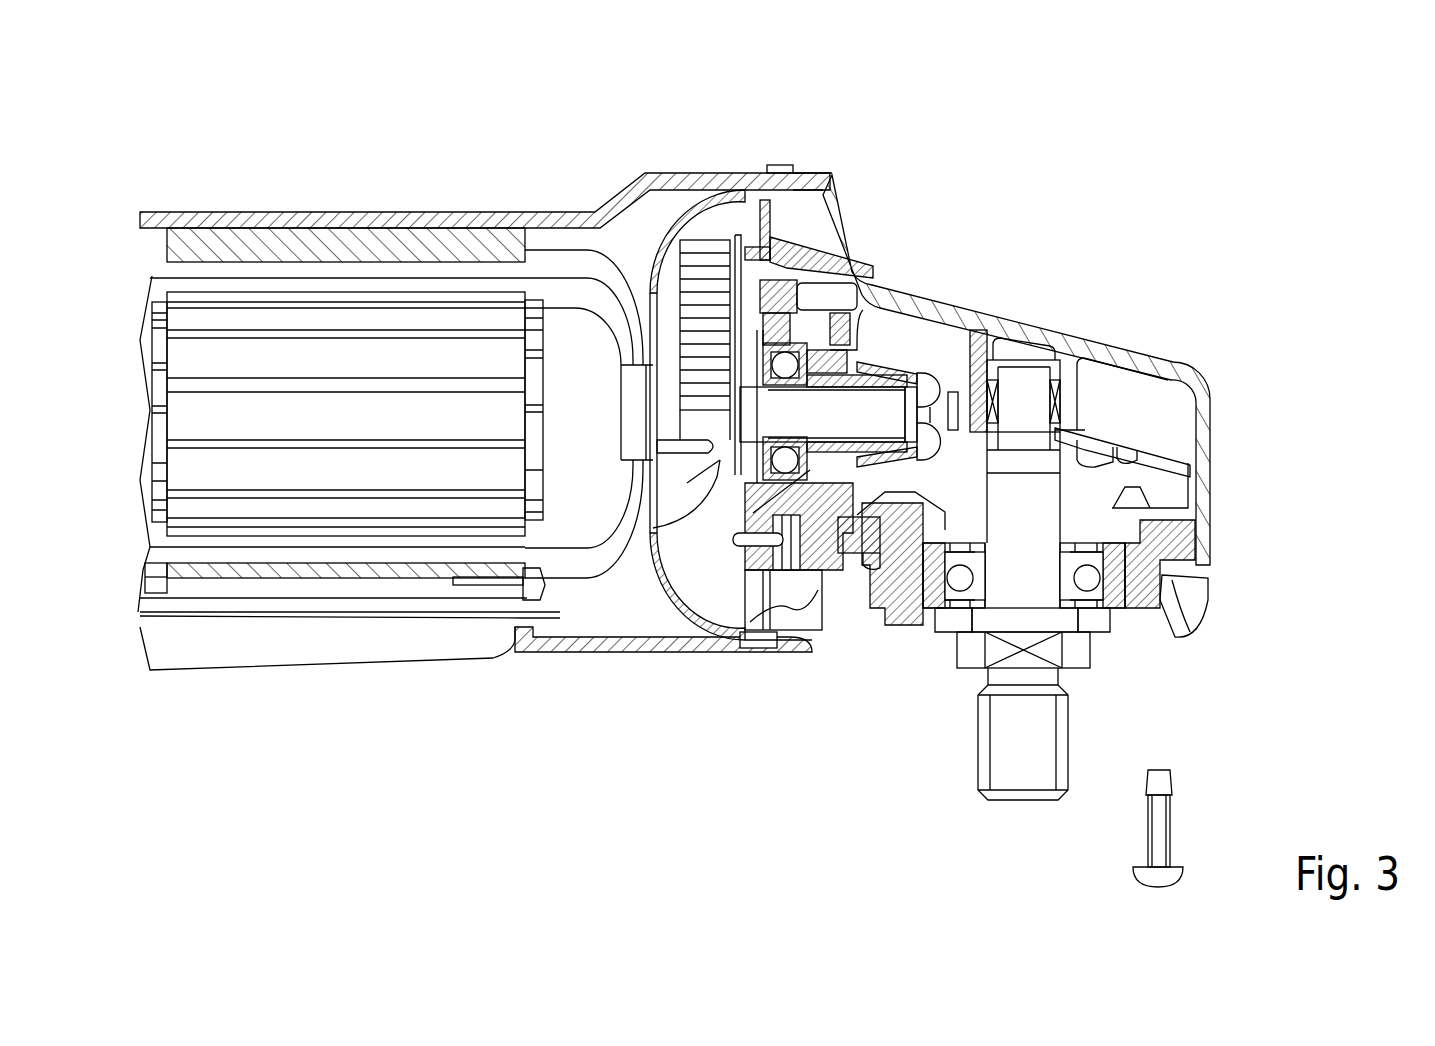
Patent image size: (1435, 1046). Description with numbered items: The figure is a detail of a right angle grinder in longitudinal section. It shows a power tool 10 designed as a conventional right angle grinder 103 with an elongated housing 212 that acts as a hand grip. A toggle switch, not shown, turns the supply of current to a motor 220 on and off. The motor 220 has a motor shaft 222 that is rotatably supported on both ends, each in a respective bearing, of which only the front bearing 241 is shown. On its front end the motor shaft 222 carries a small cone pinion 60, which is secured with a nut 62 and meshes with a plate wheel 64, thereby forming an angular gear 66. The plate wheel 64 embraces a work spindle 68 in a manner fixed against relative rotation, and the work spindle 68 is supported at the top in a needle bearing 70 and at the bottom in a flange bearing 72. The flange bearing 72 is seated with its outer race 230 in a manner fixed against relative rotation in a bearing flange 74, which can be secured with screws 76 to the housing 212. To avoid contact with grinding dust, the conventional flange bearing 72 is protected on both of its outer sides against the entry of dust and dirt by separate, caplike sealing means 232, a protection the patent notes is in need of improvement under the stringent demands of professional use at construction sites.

The power tool 10 is at (980, 152).
The cone pinion 60 is at (883, 280).
The nut 62 is at (932, 385).
The plate wheel 64 is at (1140, 472).
The angular gear 66 is at (1115, 374).
The work spindle 68 is at (1037, 740).
The needle bearing 70 is at (1062, 380).
The flange bearing 72 is at (1129, 622).
The bearing flange 74 is at (917, 595).
The screws 76 is at (1160, 830).
The right angle grinder 103 is at (1046, 243).
The housing 212 is at (716, 172).
The motor 220 is at (309, 355).
The motor shaft 222 is at (782, 415).
The outer race 230 is at (953, 625).
The sealing means 232 is at (966, 539).
The front bearing 241 is at (755, 512).